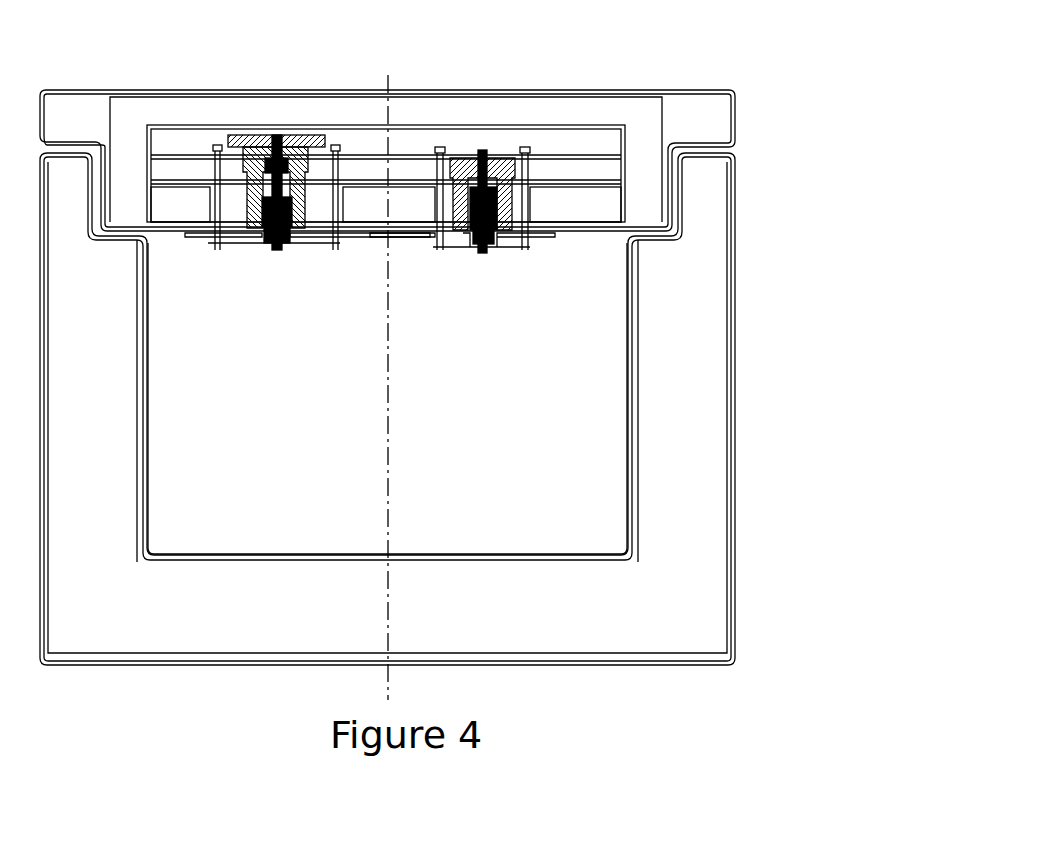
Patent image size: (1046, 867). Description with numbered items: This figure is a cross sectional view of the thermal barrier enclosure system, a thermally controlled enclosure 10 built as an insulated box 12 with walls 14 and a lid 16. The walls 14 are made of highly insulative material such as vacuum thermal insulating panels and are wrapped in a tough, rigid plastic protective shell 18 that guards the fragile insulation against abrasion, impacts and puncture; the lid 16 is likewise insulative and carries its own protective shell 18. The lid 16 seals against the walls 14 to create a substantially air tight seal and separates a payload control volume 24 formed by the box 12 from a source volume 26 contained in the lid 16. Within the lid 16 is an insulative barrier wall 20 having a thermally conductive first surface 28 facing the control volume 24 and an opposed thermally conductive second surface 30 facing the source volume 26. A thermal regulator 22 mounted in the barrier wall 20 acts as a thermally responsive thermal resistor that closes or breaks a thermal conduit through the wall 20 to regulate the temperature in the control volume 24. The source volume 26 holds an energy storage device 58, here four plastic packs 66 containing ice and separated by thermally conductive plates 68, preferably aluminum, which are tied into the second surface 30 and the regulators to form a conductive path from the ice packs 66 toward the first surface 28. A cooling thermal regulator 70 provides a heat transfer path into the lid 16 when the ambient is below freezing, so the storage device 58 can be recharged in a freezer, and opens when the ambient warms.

The thermally controlled enclosure 10 is at (753, 462).
The insulated box 12 is at (741, 225).
The walls 14 is at (712, 298).
The lid 16 is at (739, 136).
The protective shell 18 is at (737, 100).
The insulative barrier wall 20 is at (580, 213).
The thermal regulator 22 is at (448, 213).
The payload control volume 24 is at (387, 398).
The source volume 26 is at (385, 142).
The first surface 28 is at (345, 243).
The second surface 30 is at (325, 143).
The energy storage device 58 is at (627, 142).
The plastic packs 66 is at (578, 140).
The thermally conductive plates 68 is at (460, 160).
The cooling thermal regulator 70 is at (252, 195).